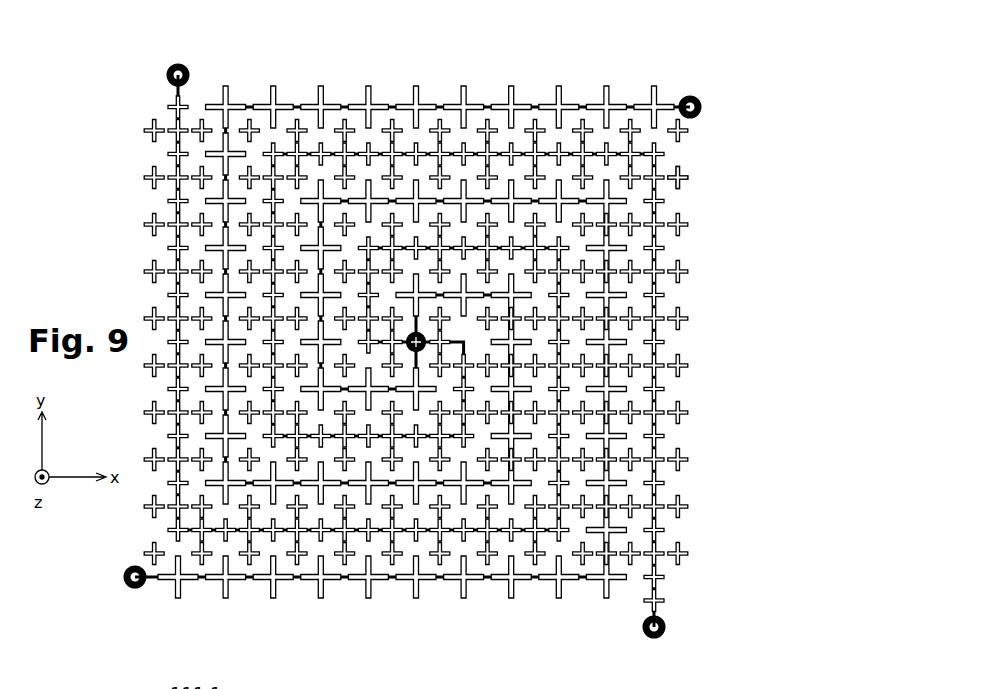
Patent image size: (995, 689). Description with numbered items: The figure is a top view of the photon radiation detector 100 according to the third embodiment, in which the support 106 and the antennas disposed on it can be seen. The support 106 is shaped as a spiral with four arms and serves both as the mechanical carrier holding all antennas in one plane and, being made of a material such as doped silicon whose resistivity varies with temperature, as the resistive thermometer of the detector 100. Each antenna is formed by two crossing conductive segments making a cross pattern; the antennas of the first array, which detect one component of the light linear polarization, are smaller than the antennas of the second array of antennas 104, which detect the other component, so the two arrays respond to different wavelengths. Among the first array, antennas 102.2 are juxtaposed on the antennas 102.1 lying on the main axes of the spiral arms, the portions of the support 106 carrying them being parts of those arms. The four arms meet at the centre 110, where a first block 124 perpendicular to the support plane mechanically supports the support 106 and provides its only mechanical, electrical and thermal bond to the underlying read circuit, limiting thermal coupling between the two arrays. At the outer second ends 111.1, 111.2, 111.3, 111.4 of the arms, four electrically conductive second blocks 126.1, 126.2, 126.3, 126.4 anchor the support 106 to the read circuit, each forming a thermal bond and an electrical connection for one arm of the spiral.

The detector 100 is at (417, 352).
The antennas on the main axes of the arms of the spiral 102.1 is at (170, 154).
The juxtaposed antennas 102.2 is at (144, 131).
The second array of antennas 104 is at (416, 599).
The support 106 is at (727, 195).
The centre 110 is at (424, 338).
The second end of the first arm of the spiral 111.1 is at (178, 64).
The second end of the second arm of the spiral 111.2 is at (654, 639).
The second end of the third arm of the spiral 111.3 is at (702, 108).
The second end of the fourth arm of the spiral 111.4 is at (134, 589).
The first block 124 is at (424, 349).
The second block 126.1 is at (167, 76).
The second block 126.2 is at (665, 628).
The second block 126.3 is at (690, 95).
The second block 126.4 is at (124, 577).